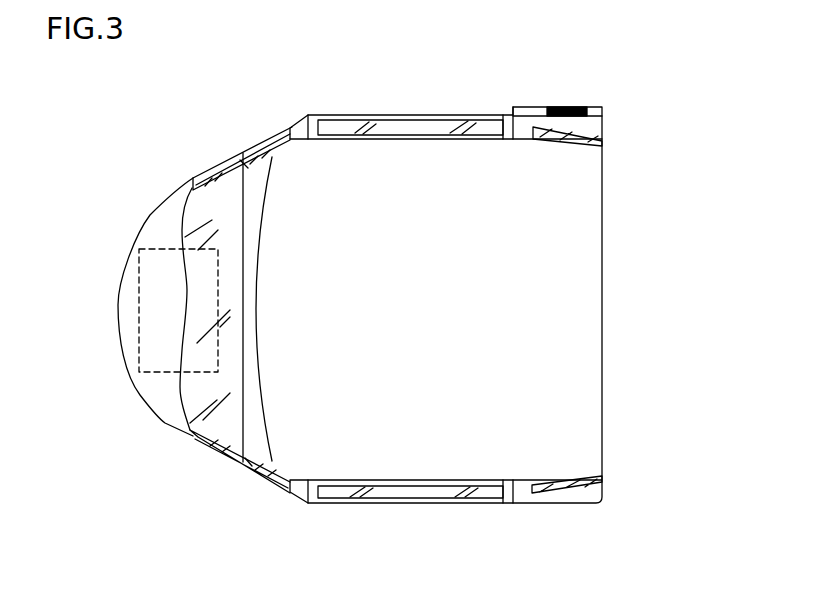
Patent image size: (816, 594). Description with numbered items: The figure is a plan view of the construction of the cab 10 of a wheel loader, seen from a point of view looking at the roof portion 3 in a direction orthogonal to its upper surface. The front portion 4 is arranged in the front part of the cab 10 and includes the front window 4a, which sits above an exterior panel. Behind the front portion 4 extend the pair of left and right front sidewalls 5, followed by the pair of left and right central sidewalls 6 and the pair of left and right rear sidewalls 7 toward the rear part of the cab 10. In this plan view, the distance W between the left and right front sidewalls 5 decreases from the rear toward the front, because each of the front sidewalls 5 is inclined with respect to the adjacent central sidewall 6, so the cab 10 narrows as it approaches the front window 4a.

The cab 10 is at (692, 82).
The roof portion 3 is at (487, 440).
The front portion 4 is at (162, 387).
The front window 4a is at (212, 387).
The front sidewalls 5 is at (242, 160).
The central sidewalls 6 is at (427, 124).
The rear sidewalls 7 is at (592, 113).
The distance W is at (247, 260).